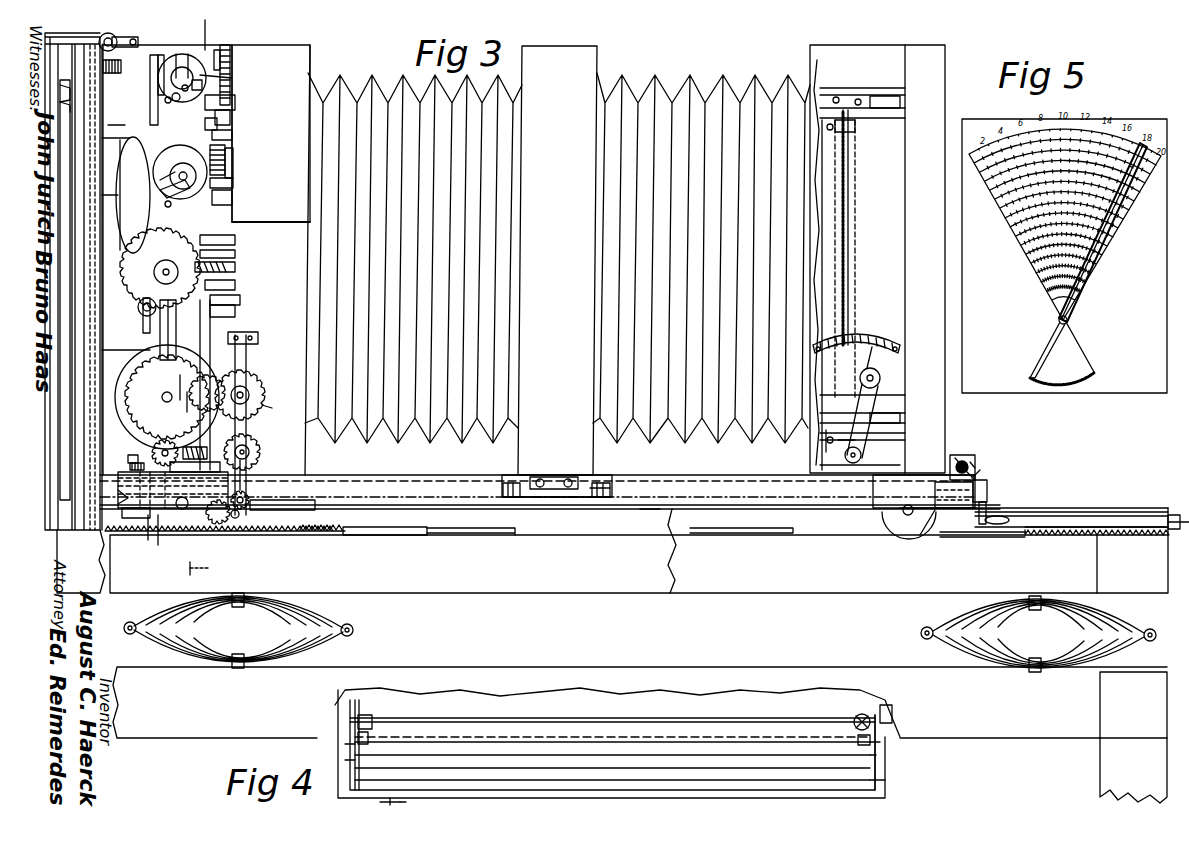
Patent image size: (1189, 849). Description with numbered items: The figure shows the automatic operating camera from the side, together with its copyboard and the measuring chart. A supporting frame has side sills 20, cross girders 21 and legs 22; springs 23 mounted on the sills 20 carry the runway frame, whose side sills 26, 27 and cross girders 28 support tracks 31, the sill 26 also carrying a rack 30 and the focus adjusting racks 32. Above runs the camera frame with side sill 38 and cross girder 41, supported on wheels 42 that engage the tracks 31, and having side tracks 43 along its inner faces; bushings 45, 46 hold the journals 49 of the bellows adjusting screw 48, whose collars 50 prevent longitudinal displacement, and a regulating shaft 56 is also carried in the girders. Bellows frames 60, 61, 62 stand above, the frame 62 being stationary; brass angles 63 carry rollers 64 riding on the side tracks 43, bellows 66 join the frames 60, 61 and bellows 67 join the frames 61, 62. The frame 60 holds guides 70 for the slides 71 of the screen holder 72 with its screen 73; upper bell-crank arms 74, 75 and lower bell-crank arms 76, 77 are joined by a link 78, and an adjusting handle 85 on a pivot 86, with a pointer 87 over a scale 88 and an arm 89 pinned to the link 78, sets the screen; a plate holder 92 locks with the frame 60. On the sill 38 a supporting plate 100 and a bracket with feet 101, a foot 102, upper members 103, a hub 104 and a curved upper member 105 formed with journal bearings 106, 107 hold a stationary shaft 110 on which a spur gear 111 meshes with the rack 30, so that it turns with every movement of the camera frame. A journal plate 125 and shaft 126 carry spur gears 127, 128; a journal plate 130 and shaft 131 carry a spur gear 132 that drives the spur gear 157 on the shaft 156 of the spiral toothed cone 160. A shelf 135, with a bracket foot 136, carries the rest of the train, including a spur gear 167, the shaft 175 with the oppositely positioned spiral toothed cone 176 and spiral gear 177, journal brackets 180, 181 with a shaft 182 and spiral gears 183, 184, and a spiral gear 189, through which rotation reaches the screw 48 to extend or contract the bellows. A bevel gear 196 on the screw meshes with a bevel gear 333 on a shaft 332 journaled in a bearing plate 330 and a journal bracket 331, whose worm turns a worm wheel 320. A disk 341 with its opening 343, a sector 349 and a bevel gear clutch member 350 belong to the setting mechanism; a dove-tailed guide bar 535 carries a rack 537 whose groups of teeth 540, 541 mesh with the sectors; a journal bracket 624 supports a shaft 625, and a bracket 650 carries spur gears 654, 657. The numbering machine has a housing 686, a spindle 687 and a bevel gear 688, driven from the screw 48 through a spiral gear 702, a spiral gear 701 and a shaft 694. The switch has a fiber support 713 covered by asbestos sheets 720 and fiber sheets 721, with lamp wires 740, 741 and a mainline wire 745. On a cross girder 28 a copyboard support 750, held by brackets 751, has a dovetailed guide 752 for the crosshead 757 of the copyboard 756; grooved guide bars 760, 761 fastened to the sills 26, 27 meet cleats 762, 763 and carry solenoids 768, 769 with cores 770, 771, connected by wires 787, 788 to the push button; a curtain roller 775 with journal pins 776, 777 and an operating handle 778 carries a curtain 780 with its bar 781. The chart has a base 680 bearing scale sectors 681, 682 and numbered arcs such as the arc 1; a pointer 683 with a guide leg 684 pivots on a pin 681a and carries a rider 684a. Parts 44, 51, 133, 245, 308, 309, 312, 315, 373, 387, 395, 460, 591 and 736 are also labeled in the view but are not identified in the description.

In FIG. 3, the frame plate 1 is at (209, 23).
In FIG. 4, the base plate 20 is at (640, 702).
In FIG. 4, the end block 21 is at (1100, 721).
In FIG. 4, the end block lower 22 is at (1100, 776).
In FIG. 3, the leaf spring 23 is at (333, 640).
In FIG. 3, the base 26 is at (639, 551).
In FIG. 4, the base 26 is at (758, 718).
In FIG. 4, the frame 27 is at (450, 718).
In FIG. 3, the base partition 28 is at (1097, 579).
In FIG. 4, the base partition 28 is at (580, 735).
In FIG. 3, the rack 30 is at (332, 535).
In FIG. 3, the rail bar 31 is at (508, 538).
In FIG. 3, the rail bar 32 is at (397, 536).
In FIG. 3, the rail 38 is at (664, 510).
In FIG. 3, the carriage base 41 is at (960, 510).
In FIG. 3, the roller 42 is at (548, 518).
In FIG. 3, the carriage plate 43 is at (560, 500).
In FIG. 3, the carriage box 44 is at (118, 480).
In FIG. 3, the carriage latch 45 is at (118, 497).
In FIG. 3, the bracket 46 is at (984, 468).
In FIG. 3, the carriage block 48 is at (605, 478).
In FIG. 3, the knob block 49 is at (1006, 484).
In FIG. 3, the post 50 is at (148, 520).
In FIG. 3, the handle 51 is at (1000, 515).
In FIG. 3, the carriage plate 56 is at (588, 492).
In FIG. 3, the rear standard 60 is at (877, 259).
In FIG. 3, the central standard 61 is at (557, 260).
In FIG. 3, the front standard 62 is at (206, 287).
In FIG. 3, the clamp plate 63 is at (552, 477).
In FIG. 3, the screw 64 is at (538, 478).
In FIG. 3, the rear bellows 66 is at (652, 78).
In FIG. 3, the front bellows 67 is at (352, 75).
In FIG. 3, the guide bar 70 is at (880, 88).
In FIG. 3, the guide block 71 is at (900, 102).
In FIG. 3, the rack bar 72 is at (849, 176).
In FIG. 3, the guide rod 73 is at (849, 232).
In FIG. 3, the screw 74 is at (848, 96).
In FIG. 3, the screw 75 is at (835, 128).
In FIG. 3, the link 76 is at (860, 444).
In FIG. 3, the pivot screw 77 is at (821, 441).
In FIG. 3, the rod 78 is at (825, 264).
In FIG. 3, the lever 85 is at (872, 388).
In FIG. 3, the pivot 86 is at (861, 456).
In FIG. 3, the pivot disc 87 is at (880, 376).
In FIG. 3, the toothed sector 88 is at (866, 343).
In FIG. 3, the cross bar 89 is at (857, 473).
In FIG. 3, the rear plate 92 is at (916, 259).
In FIG. 3, the pinion 100 is at (238, 508).
In FIG. 3, the rack 101 is at (225, 520).
In FIG. 3, the rod 102 is at (248, 345).
In FIG. 3, the bar 103 is at (278, 522).
In FIG. 3, the gear 104 is at (252, 530).
In FIG. 3, the shaft 105 is at (209, 385).
In FIG. 3, the shaft 106 is at (248, 460).
In FIG. 3, the hub 107 is at (250, 395).
In FIG. 3, the pinion 110 is at (230, 518).
In FIG. 3, the guide rod 111 is at (537, 484).
In FIG. 3, the gear 125 is at (252, 440).
In FIG. 3, the hub 126 is at (250, 451).
In FIG. 3, the rail 127 is at (320, 475).
In FIG. 3, the rail 128 is at (537, 465).
In FIG. 3, the gear 130 is at (250, 380).
In FIG. 3, the gear 131 is at (209, 395).
In FIG. 3, the gear rim 132 is at (273, 410).
In FIG. 3, the gear wheel 133 is at (167, 397).
In FIG. 3, the bar 135 is at (248, 222).
In FIG. 3, the block 136 is at (236, 240).
In FIG. 3, the hub 156 is at (161, 390).
In FIG. 3, the arm 157 is at (171, 405).
In FIG. 3, the ring 160 is at (124, 363).
In FIG. 5, the ring 160 is at (1076, 383).
In FIG. 3, the bar 167 is at (160, 340).
In FIG. 3, the ratchet wheel 175 is at (160, 266).
In FIG. 3, the arm 176 is at (132, 195).
In FIG. 3, the block 177 is at (236, 254).
In FIG. 3, the block 180 is at (236, 267).
In FIG. 3, the block 181 is at (192, 467).
In FIG. 3, the arm 182 is at (187, 387).
In FIG. 3, the block 183 is at (236, 283).
In FIG. 3, the bar 184 is at (197, 475).
In FIG. 3, the gear 189 is at (150, 450).
In FIG. 3, the post 196 is at (161, 541).
In FIG. 3, the pin 245 is at (181, 206).
In FIG. 3, the block 308 is at (236, 312).
In FIG. 3, the lever 309 is at (175, 188).
In FIG. 3, the block 312 is at (259, 337).
In FIG. 3, the block 315 is at (241, 300).
In FIG. 3, the gear 320 is at (138, 318).
In FIG. 3, the block 330 is at (130, 467).
In FIG. 3, the block 331 is at (206, 90).
In FIG. 3, the rod 332 is at (126, 350).
In FIG. 3, the block 333 is at (125, 456).
In FIG. 3, the pin 341 is at (172, 95).
In FIG. 3, the pin 343 is at (173, 104).
In FIG. 3, the disc 349 is at (182, 52).
In FIG. 3, the bar 350 is at (232, 80).
In FIG. 3, the disc 373 is at (180, 172).
In FIG. 3, the block 387 is at (232, 200).
In FIG. 3, the arm 395 is at (163, 179).
In FIG. 3, the hub 460 is at (187, 172).
In FIG. 3, the block 535 is at (235, 102).
In FIG. 3, the rack 537 is at (221, 47).
In FIG. 3, the bar 540 is at (222, 54).
In FIG. 3, the block 541 is at (232, 137).
In FIG. 3, the disc 591 is at (175, 176).
In FIG. 3, the block 624 is at (232, 123).
In FIG. 3, the block 625 is at (231, 117).
In FIG. 3, the bar 650 is at (233, 176).
In FIG. 3, the block 654 is at (234, 190).
In FIG. 3, the block 657 is at (226, 152).
In FIG. 5, the scale plate 680 is at (1064, 256).
In FIG. 5, the scale arcs 681 is at (1017, 241).
In FIG. 5, the pivot 681a is at (1068, 321).
In FIG. 5, the arm 682 is at (1078, 343).
In FIG. 5, the pointer arm 683 is at (1048, 336).
In FIG. 5, the pointer 684 is at (1078, 300).
In FIG. 5, the pointer slot 684a is at (1125, 219).
In FIG. 3, the pin 686 is at (963, 462).
In FIG. 3, the pin 687 is at (968, 465).
In FIG. 3, the pin 688 is at (980, 447).
In FIG. 3, the arm 694 is at (975, 465).
In FIG. 3, the rail 701 is at (935, 525).
In FIG. 3, the block 702 is at (954, 495).
In FIG. 3, the rail 713 is at (1120, 524).
In FIG. 3, the rail 720 is at (1090, 510).
In FIG. 3, the rail 721 is at (1065, 512).
In FIG. 3, the bar 736 is at (135, 132).
In FIG. 3, the bar 740 is at (126, 116).
In FIG. 3, the bar 741 is at (142, 302).
In FIG. 3, the cam 745 is at (133, 195).
In FIG. 3, the frame end 750 is at (57, 545).
In FIG. 4, the frame end 750 is at (875, 782).
In FIG. 3, the bar 751 is at (68, 498).
In FIG. 3, the bracket 752 is at (72, 107).
In FIG. 4, the bracket 752 is at (360, 775).
In FIG. 4, the bar 756 is at (875, 760).
In FIG. 3, the bracket 757 is at (70, 92).
In FIG. 3, the bar 760 is at (121, 193).
In FIG. 4, the bar 760 is at (875, 745).
In FIG. 3, the bar 761 is at (154, 56).
In FIG. 4, the bar 761 is at (345, 746).
In FIG. 3, the frame strip 762 is at (74, 33).
In FIG. 4, the frame strip 762 is at (880, 770).
In FIG. 4, the bar 763 is at (355, 757).
In FIG. 4, the gear 768 is at (839, 724).
In FIG. 4, the block 769 is at (373, 725).
In FIG. 3, the block 770 is at (121, 68).
In FIG. 4, the block 770 is at (858, 742).
In FIG. 4, the block 771 is at (370, 740).
In FIG. 4, the bar 775 is at (700, 740).
In FIG. 3, the roller 776 is at (128, 29).
In FIG. 4, the roller 776 is at (894, 715).
In FIG. 4, the bar 777 is at (342, 745).
In FIG. 3, the bar 778 is at (162, 56).
In FIG. 4, the bar 780 is at (545, 718).
In FIG. 4, the bar 781 is at (612, 740).
In FIG. 4, the mark 787 is at (374, 804).
In FIG. 4, the mark 788 is at (415, 804).